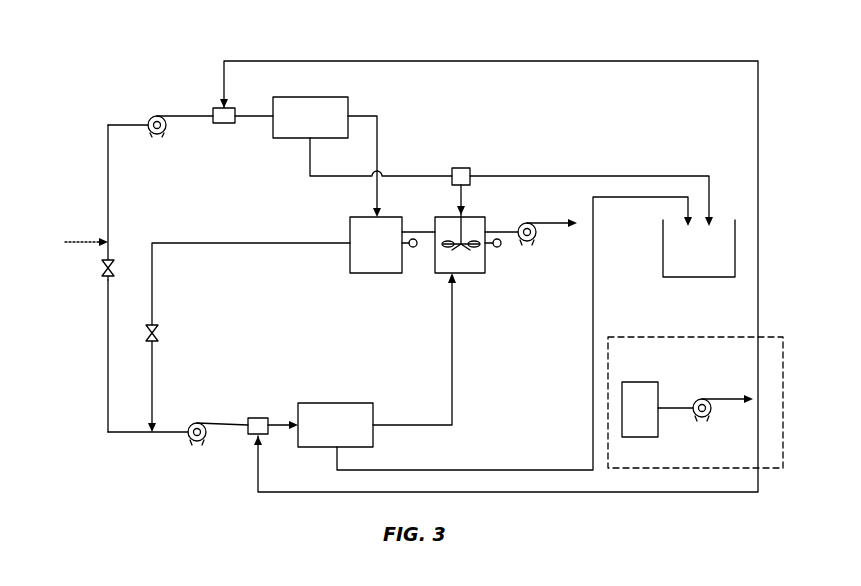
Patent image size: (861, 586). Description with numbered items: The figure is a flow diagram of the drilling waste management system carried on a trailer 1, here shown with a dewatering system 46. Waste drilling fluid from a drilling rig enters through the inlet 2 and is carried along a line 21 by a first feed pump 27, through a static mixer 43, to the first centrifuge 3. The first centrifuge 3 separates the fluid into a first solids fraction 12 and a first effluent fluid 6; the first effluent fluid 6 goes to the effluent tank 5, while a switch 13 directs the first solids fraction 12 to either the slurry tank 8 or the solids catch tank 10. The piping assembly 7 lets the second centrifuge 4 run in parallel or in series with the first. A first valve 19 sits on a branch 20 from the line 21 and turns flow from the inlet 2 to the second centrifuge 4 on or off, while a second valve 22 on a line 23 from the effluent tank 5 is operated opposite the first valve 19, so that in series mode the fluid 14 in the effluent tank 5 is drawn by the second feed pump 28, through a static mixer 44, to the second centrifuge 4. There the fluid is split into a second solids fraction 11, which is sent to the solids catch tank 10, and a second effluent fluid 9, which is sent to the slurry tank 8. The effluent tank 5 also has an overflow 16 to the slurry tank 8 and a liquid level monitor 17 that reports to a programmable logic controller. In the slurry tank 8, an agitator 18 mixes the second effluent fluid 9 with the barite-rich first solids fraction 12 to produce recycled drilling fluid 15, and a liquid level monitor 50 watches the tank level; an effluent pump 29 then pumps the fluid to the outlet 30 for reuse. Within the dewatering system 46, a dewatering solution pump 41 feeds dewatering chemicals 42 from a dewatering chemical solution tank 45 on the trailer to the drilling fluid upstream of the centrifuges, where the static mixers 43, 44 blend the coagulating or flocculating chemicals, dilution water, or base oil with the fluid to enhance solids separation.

The trailer 1 is at (148, 32).
The inlet 2 is at (88, 240).
The first centrifuge 3 is at (287, 96).
The second centrifuge 4 is at (310, 402).
The effluent tank 5 is at (358, 216).
The first effluent fluid 6 is at (380, 137).
The piping assembly 7 is at (151, 390).
The slurry tank 8 is at (467, 274).
The second effluent fluid 9 is at (413, 426).
The solids catch tank 10 is at (698, 279).
The second solids fraction 11 is at (470, 470).
The first solids fraction 12 is at (308, 160).
The switch 13 is at (463, 168).
The fluid 14 is at (258, 243).
The recycled drilling fluid 15 is at (508, 229).
The overflow 16 is at (414, 228).
The liquid level monitor 17 is at (415, 248).
The agitator 18 is at (446, 236).
The first valve 19 is at (104, 275).
The branch 20 is at (106, 352).
The line 21 is at (106, 178).
The second valve 22 is at (158, 341).
The line 23 is at (154, 288).
The first feed pump 27 is at (152, 116).
The second feed pump 28 is at (192, 441).
The effluent pump 29 is at (530, 246).
The outlet 30 is at (556, 221).
The dewatering solution pump 41 is at (712, 396).
The dewatering chemicals 42 is at (676, 411).
The static mixer 43 is at (221, 124).
The static mixer 44 is at (258, 417).
The dewatering chemical solution tank 45 is at (641, 381).
The dewatering system 46 is at (693, 337).
The liquid level monitor 50 is at (499, 248).